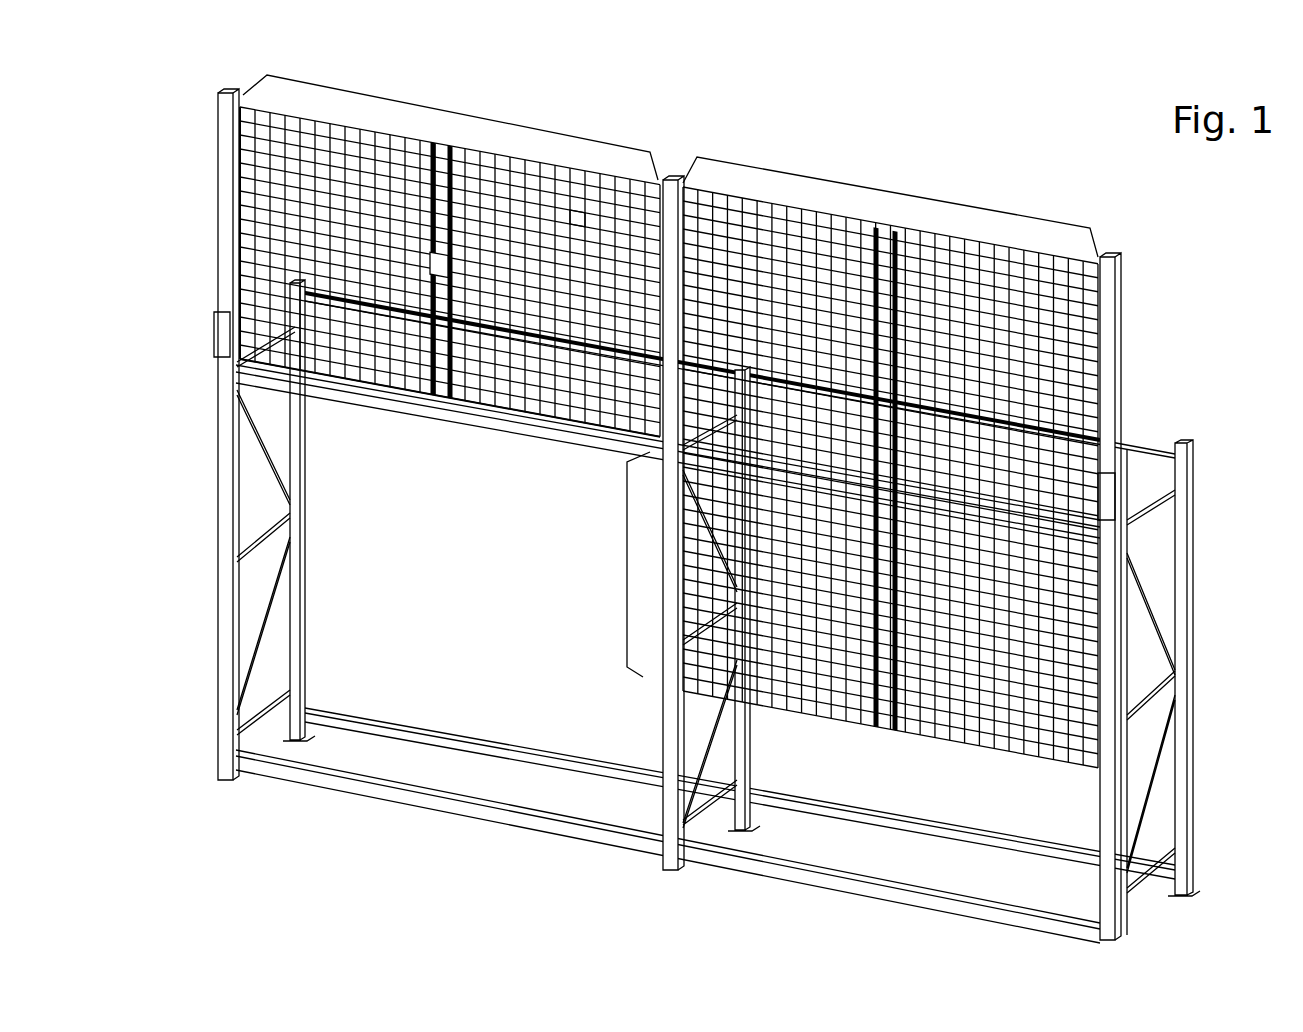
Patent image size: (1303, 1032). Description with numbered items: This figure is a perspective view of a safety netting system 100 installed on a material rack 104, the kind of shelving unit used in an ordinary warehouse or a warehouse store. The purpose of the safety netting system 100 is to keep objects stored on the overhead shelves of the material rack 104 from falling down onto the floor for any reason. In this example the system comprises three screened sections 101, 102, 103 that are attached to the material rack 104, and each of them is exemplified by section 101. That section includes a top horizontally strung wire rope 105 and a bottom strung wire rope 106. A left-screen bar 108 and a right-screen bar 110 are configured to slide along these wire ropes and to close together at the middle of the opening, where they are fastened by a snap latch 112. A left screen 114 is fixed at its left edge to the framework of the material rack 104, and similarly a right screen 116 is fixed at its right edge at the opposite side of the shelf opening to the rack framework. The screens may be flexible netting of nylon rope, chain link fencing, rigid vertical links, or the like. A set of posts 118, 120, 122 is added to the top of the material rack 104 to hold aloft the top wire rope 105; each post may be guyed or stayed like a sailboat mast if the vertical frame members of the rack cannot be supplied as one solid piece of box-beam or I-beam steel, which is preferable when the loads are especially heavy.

The safety netting system 100 is at (668, 494).
The screened section 101 is at (419, 285).
The screened section 102 is at (893, 195).
The screened section 103 is at (627, 565).
The material rack 104 is at (1199, 728).
The top horizontally strung wire rope 105 is at (342, 118).
The bottom strung wire rope 106 is at (357, 382).
The left-screen bar 108 is at (423, 385).
The right-screen bar 110 is at (470, 395).
The snap latch 112 is at (445, 266).
The left screen 114 is at (286, 205).
The right screen 116 is at (583, 210).
The post 118 is at (226, 90).
The post 120 is at (672, 178).
The post 122 is at (1113, 258).